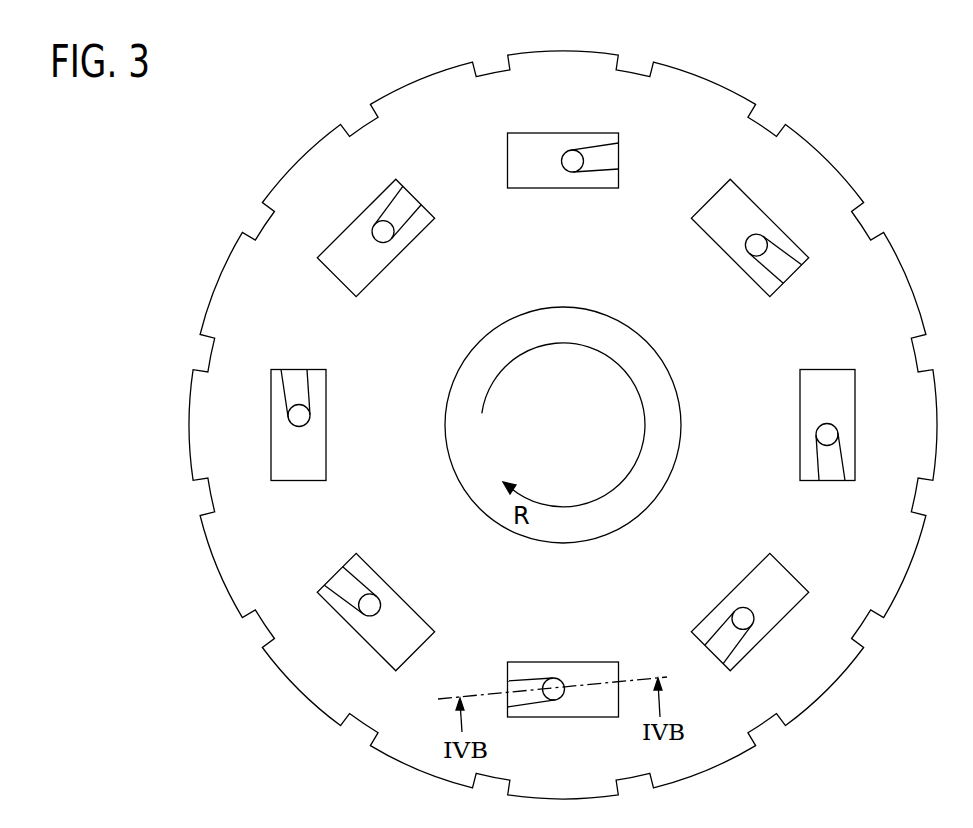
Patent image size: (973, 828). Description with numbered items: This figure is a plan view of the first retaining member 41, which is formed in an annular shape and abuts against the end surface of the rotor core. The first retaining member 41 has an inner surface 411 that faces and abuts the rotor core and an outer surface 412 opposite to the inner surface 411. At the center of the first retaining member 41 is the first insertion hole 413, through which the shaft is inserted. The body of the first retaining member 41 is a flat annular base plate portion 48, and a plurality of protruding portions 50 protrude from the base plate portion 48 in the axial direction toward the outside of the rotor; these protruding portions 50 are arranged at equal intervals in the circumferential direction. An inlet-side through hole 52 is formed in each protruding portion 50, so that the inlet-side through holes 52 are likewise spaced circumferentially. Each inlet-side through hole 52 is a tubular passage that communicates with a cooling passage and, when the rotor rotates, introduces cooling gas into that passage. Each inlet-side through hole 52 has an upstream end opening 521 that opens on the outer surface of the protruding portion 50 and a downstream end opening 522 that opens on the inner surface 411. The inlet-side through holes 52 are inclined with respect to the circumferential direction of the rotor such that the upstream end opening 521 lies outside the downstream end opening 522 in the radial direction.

The first retaining member 41 is at (581, 421).
The inner surface 411 is at (581, 425).
The outer surface 412 is at (782, 177).
The first insertion hole 413 is at (448, 440).
The base plate portion 48 is at (581, 425).
The protruding portion 50 is at (535, 148).
The inlet-side through hole 52 is at (563, 454).
The upstream end opening 521 is at (503, 688).
The downstream end opening 522 is at (552, 686).